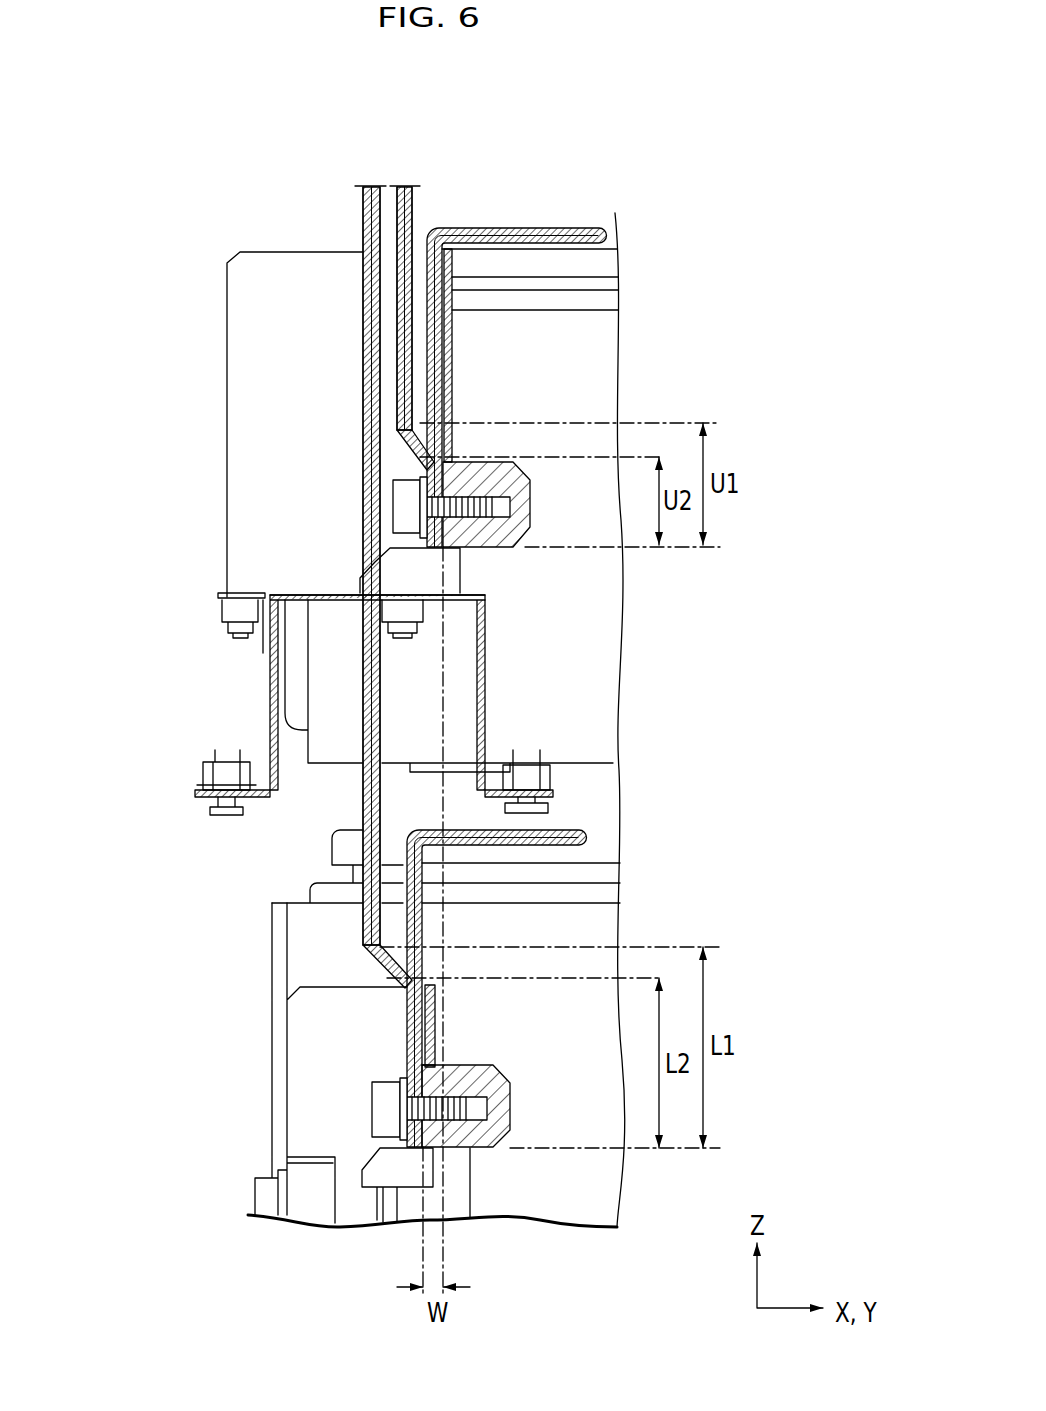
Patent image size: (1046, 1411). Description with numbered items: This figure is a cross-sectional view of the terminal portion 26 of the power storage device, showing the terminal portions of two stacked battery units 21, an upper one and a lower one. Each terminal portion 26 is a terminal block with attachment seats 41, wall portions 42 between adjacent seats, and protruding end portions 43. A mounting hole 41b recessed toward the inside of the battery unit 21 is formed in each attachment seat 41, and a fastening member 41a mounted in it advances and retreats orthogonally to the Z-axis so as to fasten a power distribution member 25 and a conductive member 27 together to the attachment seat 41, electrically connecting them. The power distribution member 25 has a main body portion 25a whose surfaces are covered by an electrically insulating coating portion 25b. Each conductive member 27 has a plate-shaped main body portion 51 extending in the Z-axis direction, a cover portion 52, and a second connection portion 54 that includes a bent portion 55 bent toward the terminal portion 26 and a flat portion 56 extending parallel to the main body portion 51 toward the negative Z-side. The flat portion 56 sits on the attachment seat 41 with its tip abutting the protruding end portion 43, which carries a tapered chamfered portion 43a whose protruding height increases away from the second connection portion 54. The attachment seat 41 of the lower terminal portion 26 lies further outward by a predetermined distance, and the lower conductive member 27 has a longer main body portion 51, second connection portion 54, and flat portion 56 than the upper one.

The battery unit 21 is at (693, 303).
The power distribution member 25 is at (601, 619).
The main body portion 25a is at (550, 233).
The coating portion 25b is at (593, 228).
The terminal portion 26 is at (217, 335).
The conductive member 27 is at (329, 517).
The attachment seat 41 is at (319, 795).
The fastening member 41a is at (407, 510).
The mounting hole 41b is at (420, 483).
The wall portion 42 is at (248, 545).
The protruding end portion 43 is at (330, 890).
The chamfered portion 43a is at (395, 548).
The main body portion 51 is at (403, 232).
The cover portion 52 is at (372, 302).
The second connection portion 54 is at (254, 677).
The bent portion 55 is at (413, 440).
The flat portion 56 is at (430, 472).